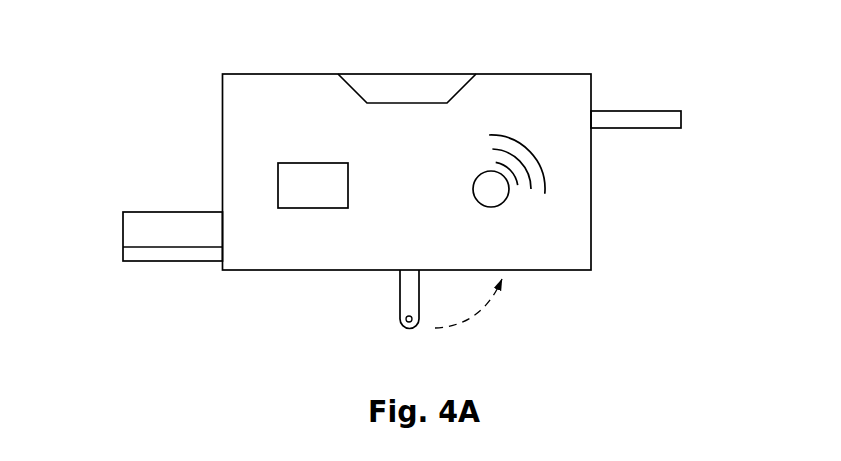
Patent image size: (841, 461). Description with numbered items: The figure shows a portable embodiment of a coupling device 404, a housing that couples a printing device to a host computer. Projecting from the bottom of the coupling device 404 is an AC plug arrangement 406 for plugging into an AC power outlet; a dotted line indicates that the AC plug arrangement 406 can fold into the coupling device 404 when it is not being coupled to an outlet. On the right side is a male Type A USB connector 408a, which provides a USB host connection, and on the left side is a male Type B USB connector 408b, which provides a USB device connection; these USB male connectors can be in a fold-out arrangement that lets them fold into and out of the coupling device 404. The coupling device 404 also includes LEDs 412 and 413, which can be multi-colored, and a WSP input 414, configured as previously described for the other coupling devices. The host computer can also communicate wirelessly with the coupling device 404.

The coupling device 404 is at (505, 72).
The LED 413 is at (387, 72).
The WSP input 414 is at (308, 151).
The LED 412 is at (476, 173).
The AC plug arrangement 406 is at (392, 303).
The male Type A USB connector 408a is at (648, 109).
The male Type B USB connector 408b is at (160, 211).